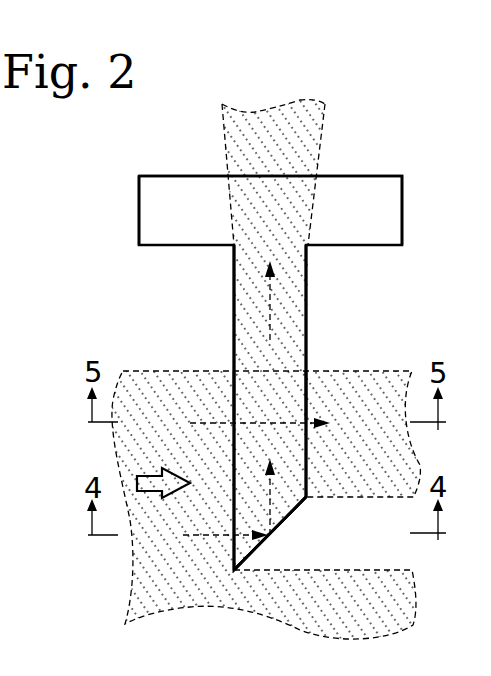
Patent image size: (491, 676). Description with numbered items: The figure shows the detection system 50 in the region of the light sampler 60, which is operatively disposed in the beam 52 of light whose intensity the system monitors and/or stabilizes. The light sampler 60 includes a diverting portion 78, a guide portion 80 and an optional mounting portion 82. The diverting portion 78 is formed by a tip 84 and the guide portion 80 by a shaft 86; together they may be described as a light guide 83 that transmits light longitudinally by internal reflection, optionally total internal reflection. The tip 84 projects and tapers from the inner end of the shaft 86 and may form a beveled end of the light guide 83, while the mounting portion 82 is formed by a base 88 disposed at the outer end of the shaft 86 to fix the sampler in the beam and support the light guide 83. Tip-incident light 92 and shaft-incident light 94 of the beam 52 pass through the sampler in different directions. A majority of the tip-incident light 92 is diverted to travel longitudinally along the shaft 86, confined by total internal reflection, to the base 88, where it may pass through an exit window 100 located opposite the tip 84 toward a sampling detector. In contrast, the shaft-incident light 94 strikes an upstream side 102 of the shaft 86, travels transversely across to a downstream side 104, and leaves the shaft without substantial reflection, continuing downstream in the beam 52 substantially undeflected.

The detection system 50 is at (218, 45).
The light sampler 60 is at (186, 154).
The exit window 100 is at (268, 177).
The mounting portion 82 is at (130, 187).
The base 88 is at (138, 222).
The guide portion 80 is at (228, 293).
The shaft 86 is at (233, 325).
The light guide 83 is at (331, 287).
The tip-incident light 92 is at (270, 312).
The beam 52 is at (170, 371).
The upstream side 102 is at (233, 393).
The downstream side 104 is at (332, 381).
The shaft-incident light 94 is at (248, 425).
The diverting portion 78 is at (292, 530).
The tip 84 is at (252, 551).